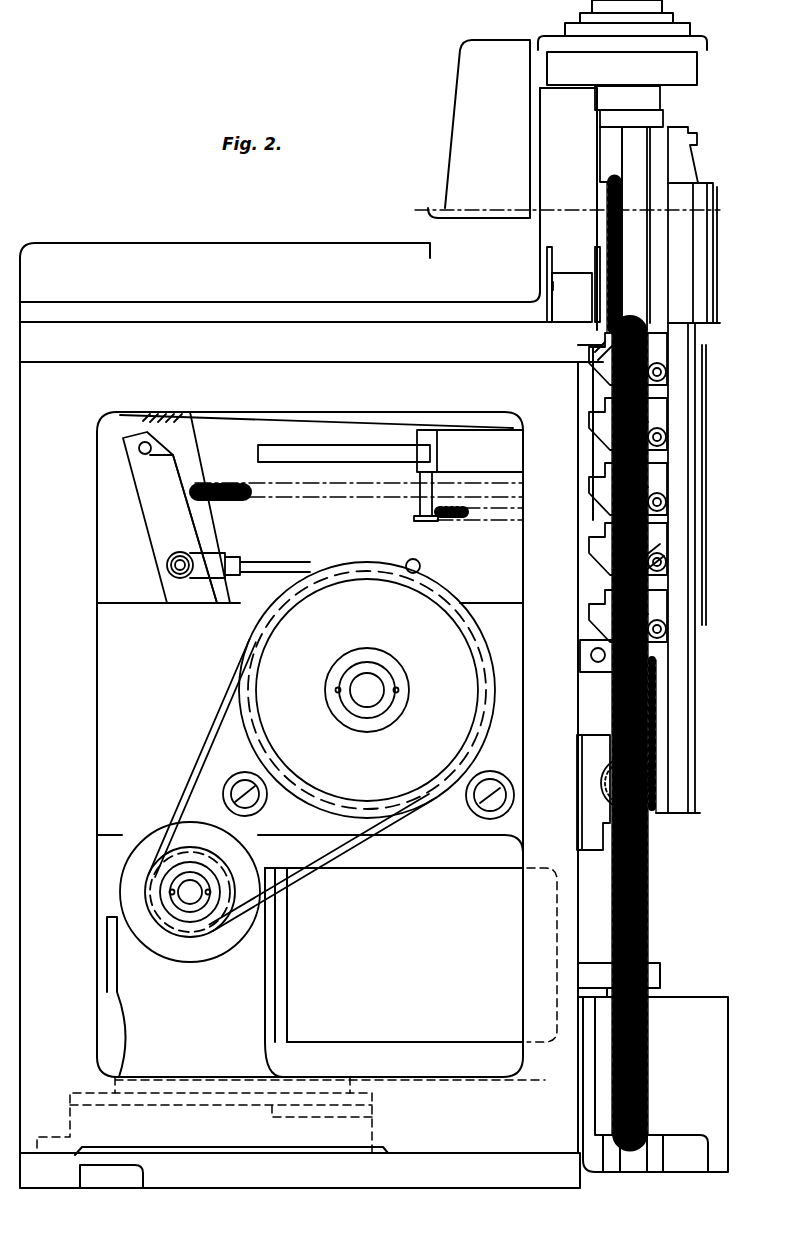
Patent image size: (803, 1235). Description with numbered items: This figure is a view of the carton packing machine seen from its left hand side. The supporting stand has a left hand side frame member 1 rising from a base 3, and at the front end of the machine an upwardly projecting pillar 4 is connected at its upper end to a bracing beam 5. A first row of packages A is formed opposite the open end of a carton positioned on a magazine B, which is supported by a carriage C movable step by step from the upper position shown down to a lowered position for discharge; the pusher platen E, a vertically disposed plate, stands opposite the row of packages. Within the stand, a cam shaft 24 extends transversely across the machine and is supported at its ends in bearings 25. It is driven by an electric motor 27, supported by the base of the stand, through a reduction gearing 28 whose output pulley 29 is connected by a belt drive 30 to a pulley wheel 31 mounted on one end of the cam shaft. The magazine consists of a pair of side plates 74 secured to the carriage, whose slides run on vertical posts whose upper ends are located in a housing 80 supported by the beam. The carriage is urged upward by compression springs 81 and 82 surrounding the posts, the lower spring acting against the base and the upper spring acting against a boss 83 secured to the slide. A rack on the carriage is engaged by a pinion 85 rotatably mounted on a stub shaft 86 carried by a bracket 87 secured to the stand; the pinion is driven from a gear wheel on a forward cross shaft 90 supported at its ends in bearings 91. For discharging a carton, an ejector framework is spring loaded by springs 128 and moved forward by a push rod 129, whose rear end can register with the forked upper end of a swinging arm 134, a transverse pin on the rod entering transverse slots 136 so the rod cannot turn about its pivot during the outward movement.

The left hand side frame member 1 is at (311, 620).
The base 3 is at (398, 1160).
The pillar 4 is at (567, 185).
The bracing beam 5 is at (622, 68).
The cam shaft 24 is at (367, 680).
The bearing 25 is at (340, 676).
The electric motor 27 is at (411, 972).
The reduction gearing 28 is at (202, 1034).
The output pulley 29 is at (148, 885).
The belt drive 30 is at (345, 870).
The pulley wheel 31 is at (367, 688).
The side plate 74 is at (717, 240).
The housing 80 is at (567, 30).
The compression spring 81 is at (648, 942).
The compression spring 82 is at (608, 190).
The boss 83 is at (607, 140).
The pinion 85 is at (650, 722).
The stub shaft 86 is at (645, 805).
The bracket 87 is at (596, 848).
The forward cross shaft 90 is at (489, 787).
The bearing 91 is at (513, 792).
The spring 128 is at (455, 520).
The push rod 129 is at (321, 468).
The swinging arm 134 is at (216, 517).
The transverse slot 136 is at (152, 452).
The packages A is at (573, 284).
The magazine B is at (707, 193).
The carriage C is at (657, 140).
The pusher platen E is at (553, 287).